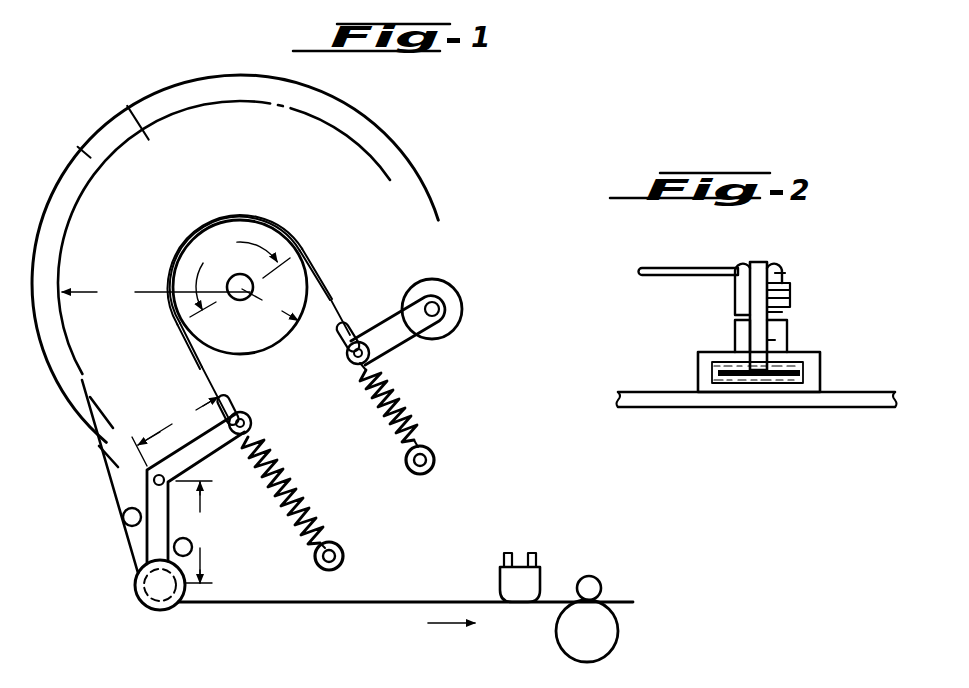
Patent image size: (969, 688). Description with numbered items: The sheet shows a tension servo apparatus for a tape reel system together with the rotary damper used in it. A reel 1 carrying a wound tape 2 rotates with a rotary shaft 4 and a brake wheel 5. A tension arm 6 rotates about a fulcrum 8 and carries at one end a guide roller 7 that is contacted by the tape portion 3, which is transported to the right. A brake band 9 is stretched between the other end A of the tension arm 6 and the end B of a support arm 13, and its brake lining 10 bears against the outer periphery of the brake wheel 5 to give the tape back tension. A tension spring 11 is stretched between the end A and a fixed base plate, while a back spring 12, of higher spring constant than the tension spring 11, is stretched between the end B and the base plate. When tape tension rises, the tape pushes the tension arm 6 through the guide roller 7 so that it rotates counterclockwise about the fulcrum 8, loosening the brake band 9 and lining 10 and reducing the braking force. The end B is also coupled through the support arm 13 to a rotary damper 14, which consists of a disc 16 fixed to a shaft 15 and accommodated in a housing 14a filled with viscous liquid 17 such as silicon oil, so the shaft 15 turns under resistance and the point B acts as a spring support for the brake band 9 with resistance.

In FIG. 1, the reel 1 is at (80, 153).
In FIG. 1, the tape 2 is at (127, 108).
In FIG. 1, the tape portion 3 is at (381, 598).
In FIG. 1, the rotary shaft 4 is at (244, 300).
In FIG. 1, the brake wheel 5 is at (269, 348).
In FIG. 1, the tension arm 6 is at (215, 455).
In FIG. 1, the guide roller 7 is at (165, 608).
In FIG. 1, the fulcrum 8 is at (153, 480).
In FIG. 1, the brake band 9 is at (202, 382).
In FIG. 1, the brake lining 10 is at (328, 292).
In FIG. 1, the tension spring 11 is at (320, 517).
In FIG. 1, the back spring 12 is at (417, 420).
In FIG. 1, the support arm 13 is at (400, 340).
In FIG. 2, the support arm 13 is at (682, 270).
In FIG. 1, the rotary damper 14 is at (462, 304).
In FIG. 2, the rotary damper 14 is at (846, 317).
In FIG. 2, the housing 14a is at (775, 340).
In FIG. 2, the shaft 15 is at (760, 262).
In FIG. 2, the disc 16 is at (726, 364).
In FIG. 2, the viscous liquid 17 is at (805, 376).
In FIG. 1, the end A of the tension arm A is at (253, 423).
In FIG. 1, the end B of the support arm B is at (351, 368).